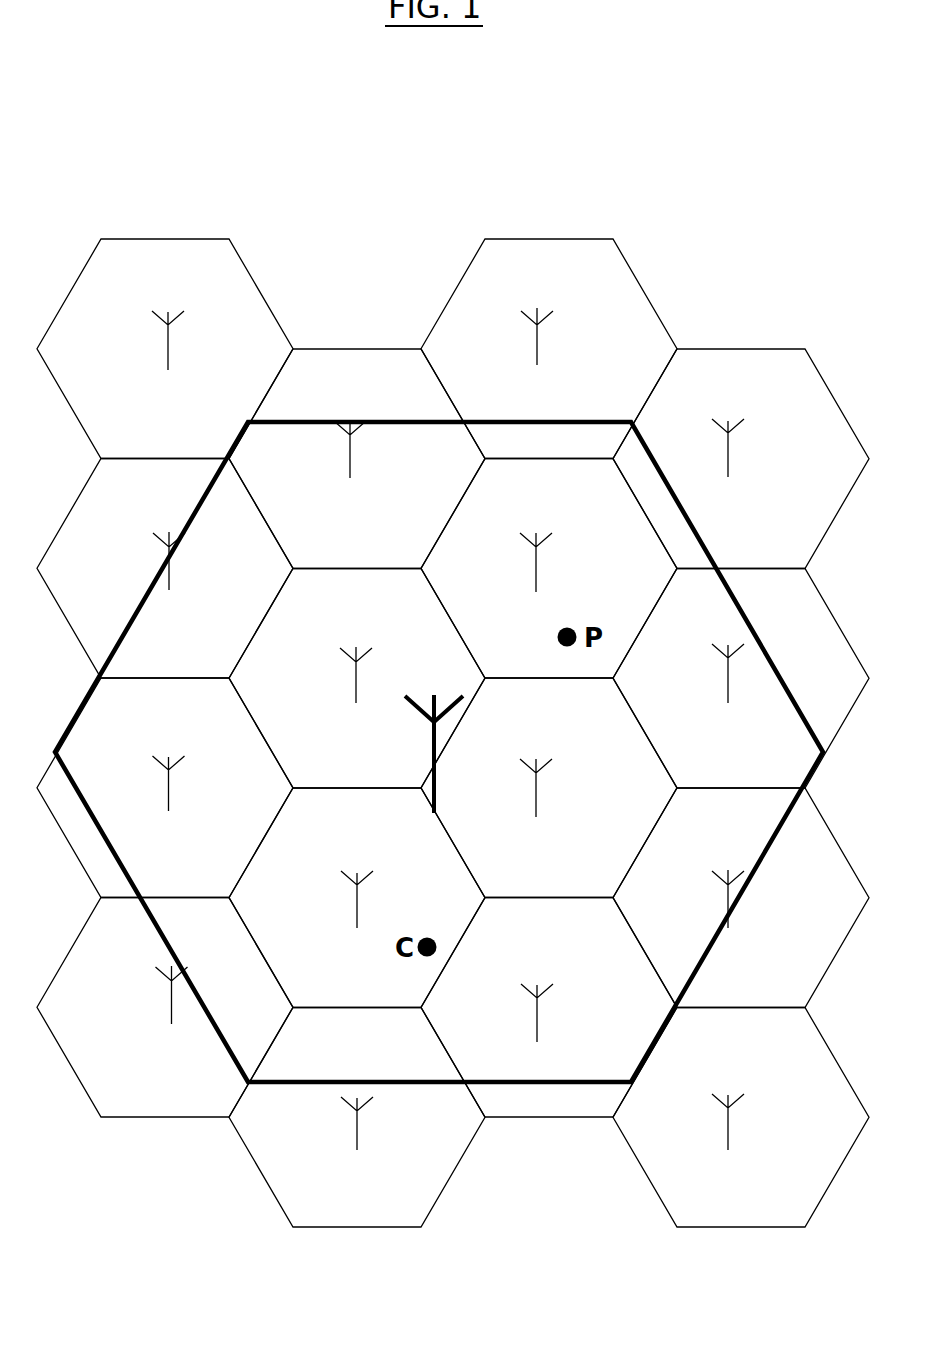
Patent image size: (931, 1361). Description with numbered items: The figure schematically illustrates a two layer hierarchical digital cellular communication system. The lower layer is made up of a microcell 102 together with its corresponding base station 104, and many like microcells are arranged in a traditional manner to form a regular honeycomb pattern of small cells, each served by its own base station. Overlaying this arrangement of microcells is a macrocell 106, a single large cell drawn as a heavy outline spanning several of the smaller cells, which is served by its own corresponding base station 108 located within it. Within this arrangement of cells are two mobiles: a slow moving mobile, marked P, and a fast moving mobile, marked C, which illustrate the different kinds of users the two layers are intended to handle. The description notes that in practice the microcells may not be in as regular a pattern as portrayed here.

The microcell 102 is at (453, 295).
The base station 104 is at (537, 350).
The macrocell 106 is at (760, 863).
The base station 108 is at (434, 772).